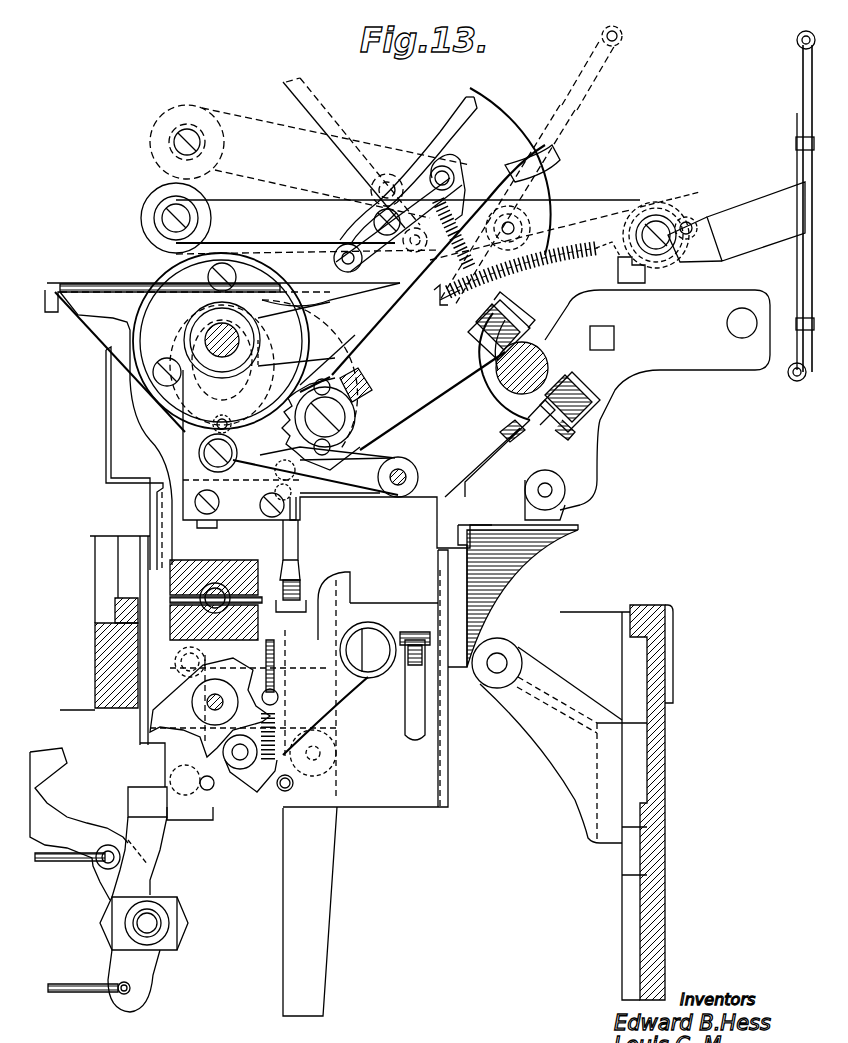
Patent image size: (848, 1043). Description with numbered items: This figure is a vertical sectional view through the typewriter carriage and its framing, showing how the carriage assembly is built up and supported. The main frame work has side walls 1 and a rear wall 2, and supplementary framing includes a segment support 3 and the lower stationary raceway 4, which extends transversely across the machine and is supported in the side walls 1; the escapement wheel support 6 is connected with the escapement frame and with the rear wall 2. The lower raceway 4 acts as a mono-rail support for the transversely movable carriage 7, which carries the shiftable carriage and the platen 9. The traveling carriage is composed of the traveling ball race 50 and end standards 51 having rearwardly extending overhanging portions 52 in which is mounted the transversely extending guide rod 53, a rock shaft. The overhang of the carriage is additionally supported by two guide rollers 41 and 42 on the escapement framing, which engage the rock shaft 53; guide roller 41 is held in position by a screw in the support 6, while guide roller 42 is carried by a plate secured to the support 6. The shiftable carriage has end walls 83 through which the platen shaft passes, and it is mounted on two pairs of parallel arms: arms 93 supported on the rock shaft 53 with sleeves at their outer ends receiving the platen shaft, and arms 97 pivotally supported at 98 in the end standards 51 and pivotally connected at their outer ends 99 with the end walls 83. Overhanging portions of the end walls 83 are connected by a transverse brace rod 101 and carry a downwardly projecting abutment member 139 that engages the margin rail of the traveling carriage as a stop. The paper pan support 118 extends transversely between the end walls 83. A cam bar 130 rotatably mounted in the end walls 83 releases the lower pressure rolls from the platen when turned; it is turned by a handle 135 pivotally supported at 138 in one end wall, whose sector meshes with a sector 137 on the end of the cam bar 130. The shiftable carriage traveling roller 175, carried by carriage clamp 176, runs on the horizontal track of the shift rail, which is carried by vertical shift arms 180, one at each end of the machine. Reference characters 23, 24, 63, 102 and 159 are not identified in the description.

The side walls 1 is at (565, 618).
The rear wall 2 is at (655, 805).
The segment support 3 is at (98, 647).
The lower stationary raceway 4 is at (172, 622).
The escapement wheel support 6 is at (540, 545).
The transversely movable carriage 7 is at (132, 414).
The platen 9 is at (165, 282).
The frame member 23 is at (447, 720).
The screw 24 is at (412, 752).
The guide roller 41 is at (594, 425).
The guide roller 42 is at (480, 312).
The traveling ball race 50 is at (172, 572).
The end standards 51 is at (432, 497).
The rearwardly extending overhanging portions 52 is at (740, 290).
The transversely extending guide rod 53 is at (552, 362).
The shaft 63 is at (200, 599).
The end walls 83 is at (183, 450).
The parallel arms 93 is at (452, 297).
The parallel arms 97 is at (365, 480).
The pivot 98 is at (396, 482).
The outer ends 99 is at (262, 470).
The transverse brace rod 101 is at (668, 256).
The link 102 is at (545, 207).
The paper pan support 118 is at (393, 296).
The cam bar 130 is at (268, 497).
The handle 135 is at (366, 350).
The sector 137 is at (300, 498).
The pivot 138 is at (346, 419).
The abutment member 139 is at (610, 277).
The rod 159 is at (98, 330).
The shiftable carriage traveling roller 175 is at (298, 553).
The carriage clamp 176 is at (300, 572).
The vertical shift arms 180 is at (326, 940).